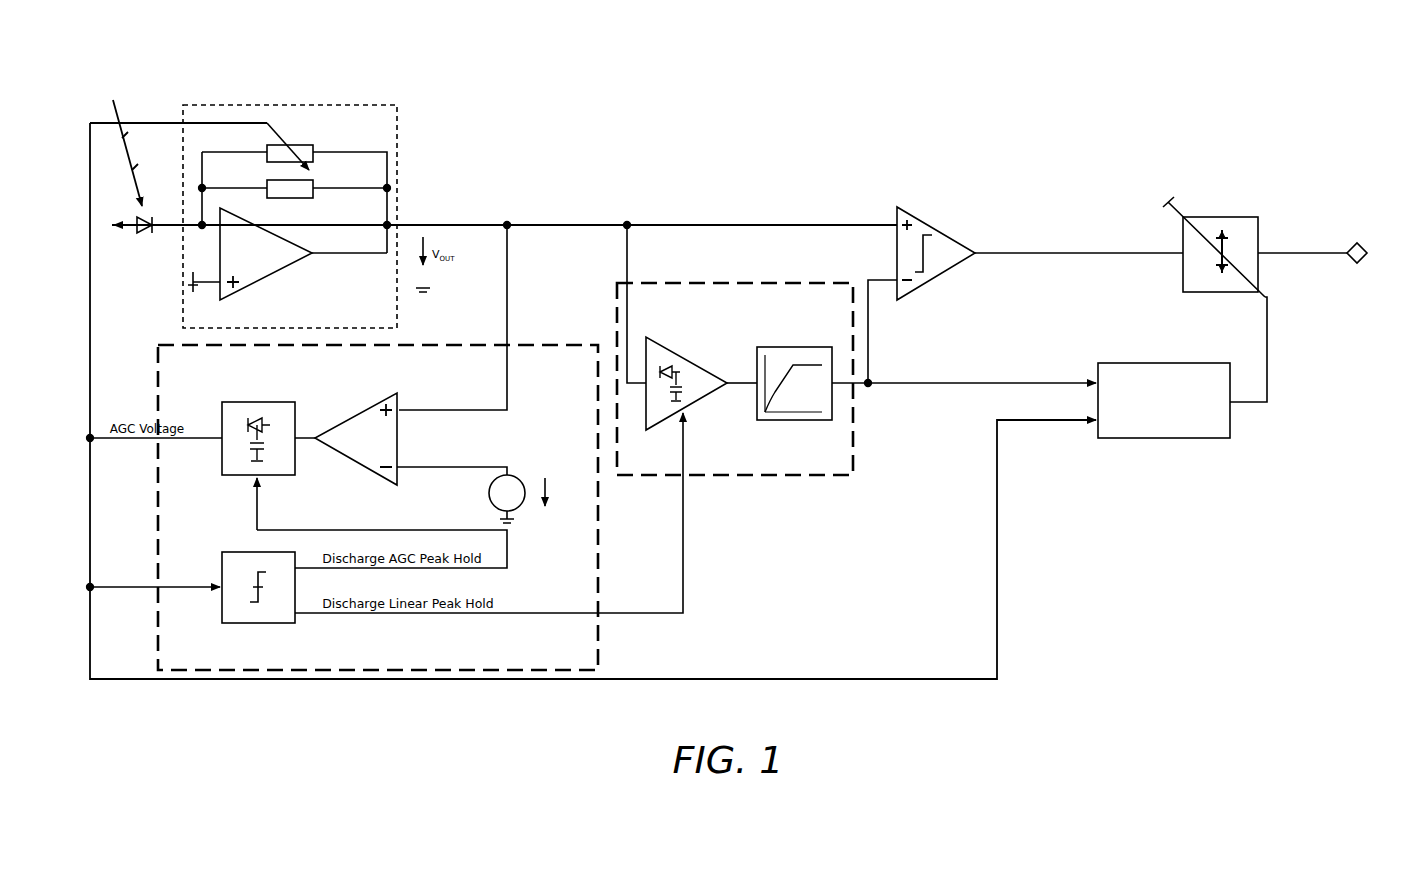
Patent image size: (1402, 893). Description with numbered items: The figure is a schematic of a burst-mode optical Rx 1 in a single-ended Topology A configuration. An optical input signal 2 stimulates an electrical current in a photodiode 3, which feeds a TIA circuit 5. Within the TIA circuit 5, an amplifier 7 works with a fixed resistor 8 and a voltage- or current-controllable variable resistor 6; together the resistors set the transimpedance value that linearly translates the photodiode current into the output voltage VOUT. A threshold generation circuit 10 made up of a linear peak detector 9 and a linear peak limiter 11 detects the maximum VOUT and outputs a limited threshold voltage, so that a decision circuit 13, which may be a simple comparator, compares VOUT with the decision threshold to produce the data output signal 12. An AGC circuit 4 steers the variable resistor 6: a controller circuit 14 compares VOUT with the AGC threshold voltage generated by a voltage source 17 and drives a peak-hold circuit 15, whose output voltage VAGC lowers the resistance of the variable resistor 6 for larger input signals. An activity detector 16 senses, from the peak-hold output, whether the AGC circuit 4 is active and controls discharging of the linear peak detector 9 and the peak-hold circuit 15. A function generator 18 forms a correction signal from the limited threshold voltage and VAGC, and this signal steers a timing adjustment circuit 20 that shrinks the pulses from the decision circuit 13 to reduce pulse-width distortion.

The burst-mode optical Rx 1 is at (1030, 76).
The optical input signal 2 is at (122, 139).
The photodiode 3 is at (150, 234).
The AGC circuit 4 is at (532, 344).
The TIA circuit 5 is at (366, 106).
The variable resistor 6 is at (268, 146).
The amplifier 7 is at (262, 242).
The fixed resistor 8 is at (313, 186).
The linear peak detector 9 is at (683, 358).
The threshold generation circuit 10 is at (775, 283).
The linear peak limiter 11 is at (782, 347).
The data output signal 12 is at (1352, 264).
The decision circuit 13 is at (915, 219).
The controller circuit 14 is at (353, 415).
The peak-hold circuit 15 is at (222, 402).
The activity detector 16 is at (243, 552).
The voltage source 17 is at (495, 490).
The function generator 18 is at (1133, 365).
The timing adjustment circuit 20 is at (1245, 220).